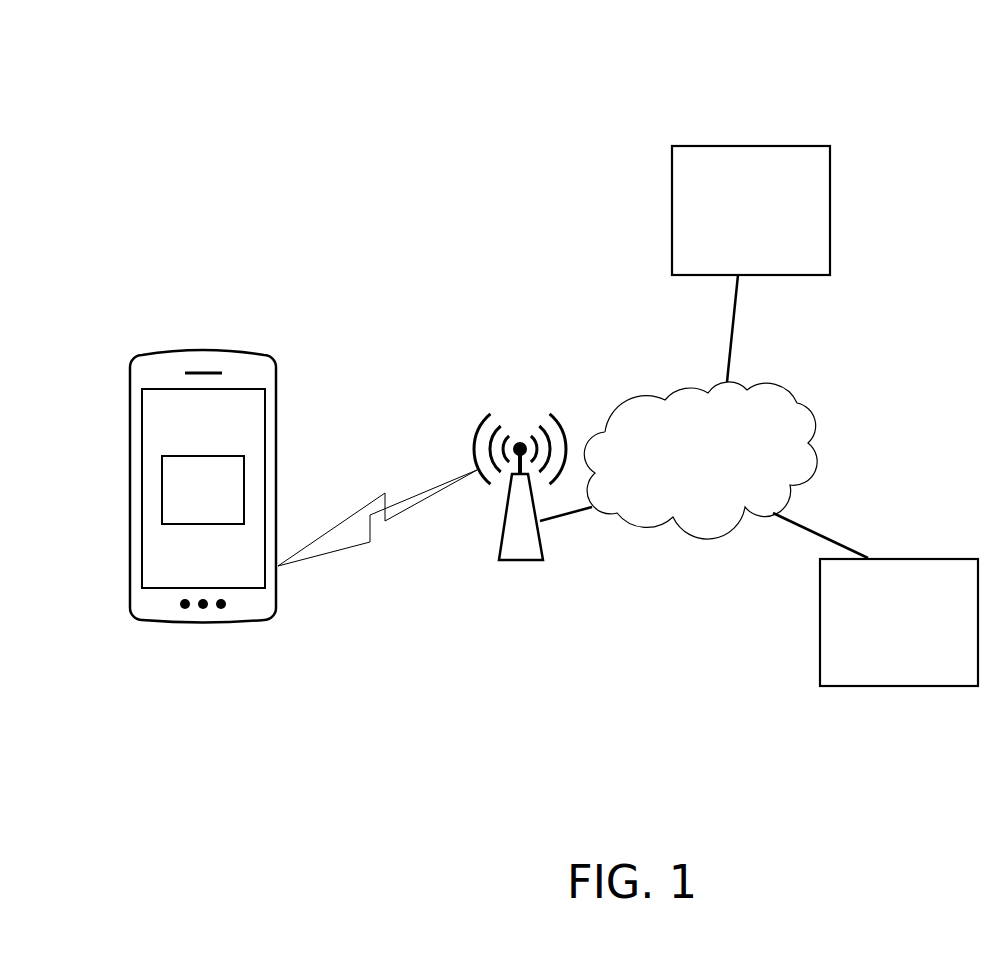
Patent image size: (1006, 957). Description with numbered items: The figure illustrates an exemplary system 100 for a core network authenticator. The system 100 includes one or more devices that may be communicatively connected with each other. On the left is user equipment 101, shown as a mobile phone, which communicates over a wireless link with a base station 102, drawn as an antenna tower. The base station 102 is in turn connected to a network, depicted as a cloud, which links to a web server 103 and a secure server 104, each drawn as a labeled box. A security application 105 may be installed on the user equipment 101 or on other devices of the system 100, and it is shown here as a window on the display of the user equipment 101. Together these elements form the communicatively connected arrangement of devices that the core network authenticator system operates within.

The system 100 is at (630, 46).
The user equipment 101 is at (124, 588).
The base station 102 is at (509, 542).
The web server 103 is at (672, 206).
The secure server 104 is at (840, 686).
The security application 105 is at (223, 501).